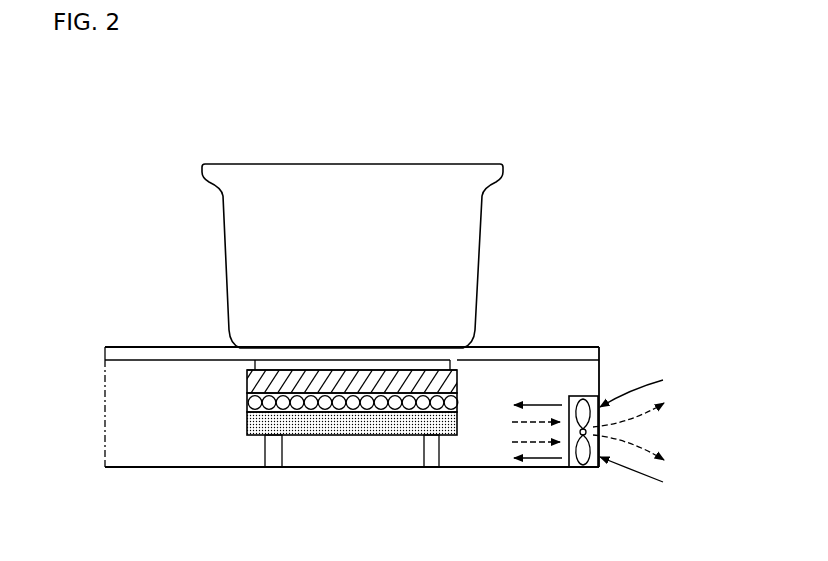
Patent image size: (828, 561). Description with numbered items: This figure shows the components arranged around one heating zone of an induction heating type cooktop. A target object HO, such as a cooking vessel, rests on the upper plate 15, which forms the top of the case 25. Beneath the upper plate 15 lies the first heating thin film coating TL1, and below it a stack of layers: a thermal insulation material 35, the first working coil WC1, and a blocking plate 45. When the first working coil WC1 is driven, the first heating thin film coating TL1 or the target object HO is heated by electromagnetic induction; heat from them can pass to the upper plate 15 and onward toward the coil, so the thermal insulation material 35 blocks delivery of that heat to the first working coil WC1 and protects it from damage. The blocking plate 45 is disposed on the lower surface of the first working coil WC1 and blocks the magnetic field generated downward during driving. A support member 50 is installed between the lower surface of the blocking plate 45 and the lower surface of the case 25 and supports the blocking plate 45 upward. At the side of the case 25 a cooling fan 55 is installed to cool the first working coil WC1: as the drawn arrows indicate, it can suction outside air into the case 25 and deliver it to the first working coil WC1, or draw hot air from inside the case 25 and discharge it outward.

The target object HO is at (417, 173).
The upper plate 15 is at (585, 352).
The case 25 is at (599, 378).
The first heating thin film coating TL1 is at (253, 368).
The thermal insulation material 35 is at (458, 370).
The first working coil WC1 is at (458, 413).
The blocking plate 45 is at (247, 432).
The support member 50 is at (273, 452).
The cooling fan 55 is at (578, 465).